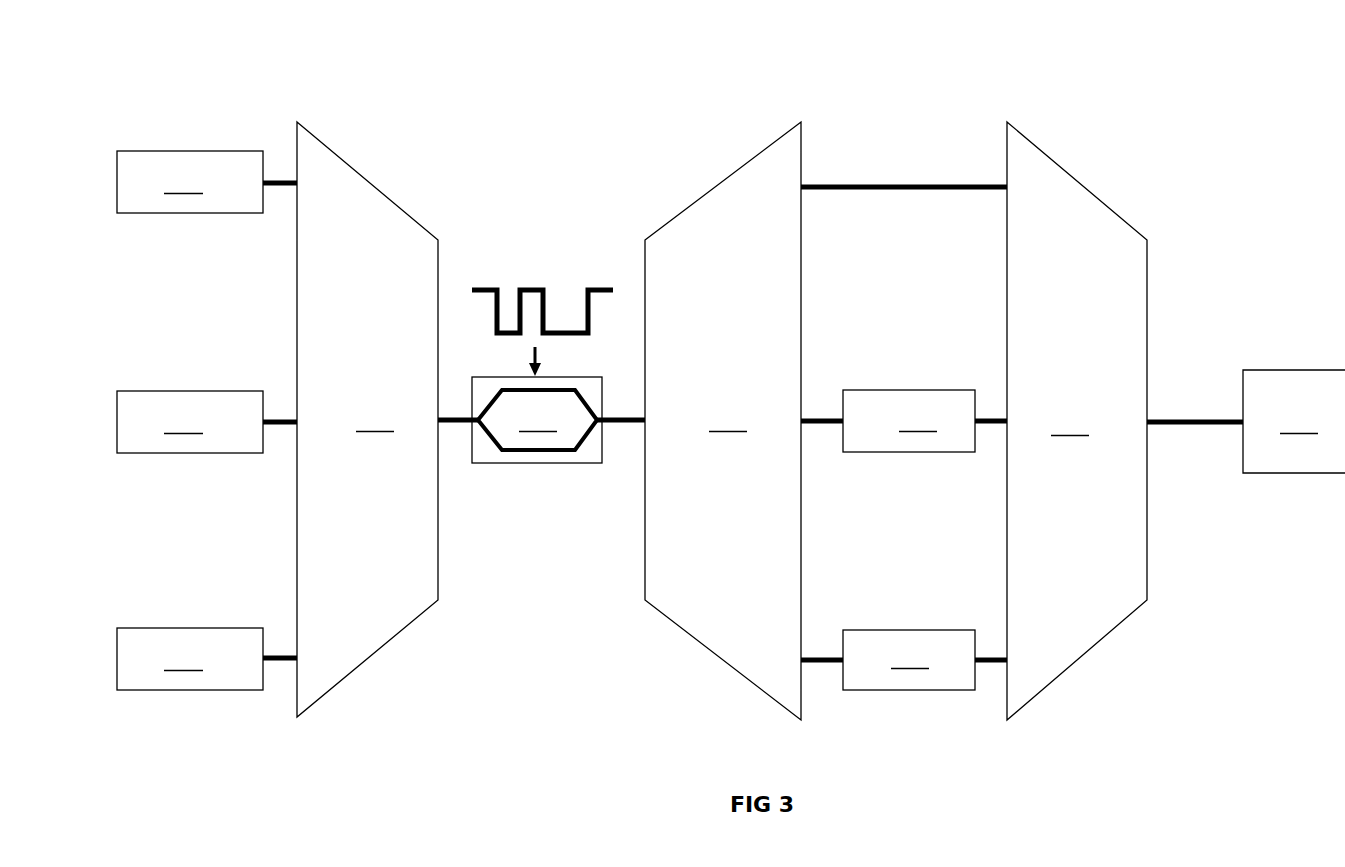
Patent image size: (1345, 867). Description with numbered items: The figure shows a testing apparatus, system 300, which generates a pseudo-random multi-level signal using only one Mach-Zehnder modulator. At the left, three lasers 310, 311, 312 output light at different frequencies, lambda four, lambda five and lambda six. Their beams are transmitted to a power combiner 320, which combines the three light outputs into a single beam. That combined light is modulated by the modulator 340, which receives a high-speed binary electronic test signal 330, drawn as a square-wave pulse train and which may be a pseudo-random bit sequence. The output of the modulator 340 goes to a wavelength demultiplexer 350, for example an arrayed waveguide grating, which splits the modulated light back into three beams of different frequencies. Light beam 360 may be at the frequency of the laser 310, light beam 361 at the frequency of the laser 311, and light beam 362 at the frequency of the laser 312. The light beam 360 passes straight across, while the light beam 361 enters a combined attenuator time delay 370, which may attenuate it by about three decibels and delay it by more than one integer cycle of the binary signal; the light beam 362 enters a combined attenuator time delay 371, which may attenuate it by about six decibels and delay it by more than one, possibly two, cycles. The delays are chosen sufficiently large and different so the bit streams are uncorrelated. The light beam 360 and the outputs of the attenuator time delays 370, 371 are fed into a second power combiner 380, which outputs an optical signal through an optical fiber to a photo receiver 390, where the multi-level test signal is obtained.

The system 300 is at (700, 87).
The laser 310 is at (207, 182).
The laser 311 is at (207, 422).
The laser 312 is at (207, 659).
The power combiner 320 is at (387, 419).
The test signal 330 is at (518, 282).
The modulator 340 is at (558, 420).
The wavelength demultiplexer 350 is at (723, 421).
The light beam 360 is at (853, 185).
The light beam 361 is at (828, 419).
The light beam 362 is at (828, 663).
The combined attenuator time delay 370 is at (925, 421).
The combined attenuator time delay 371 is at (925, 660).
The power combiner 380 is at (1125, 421).
The photo receiver 390 is at (1294, 421).